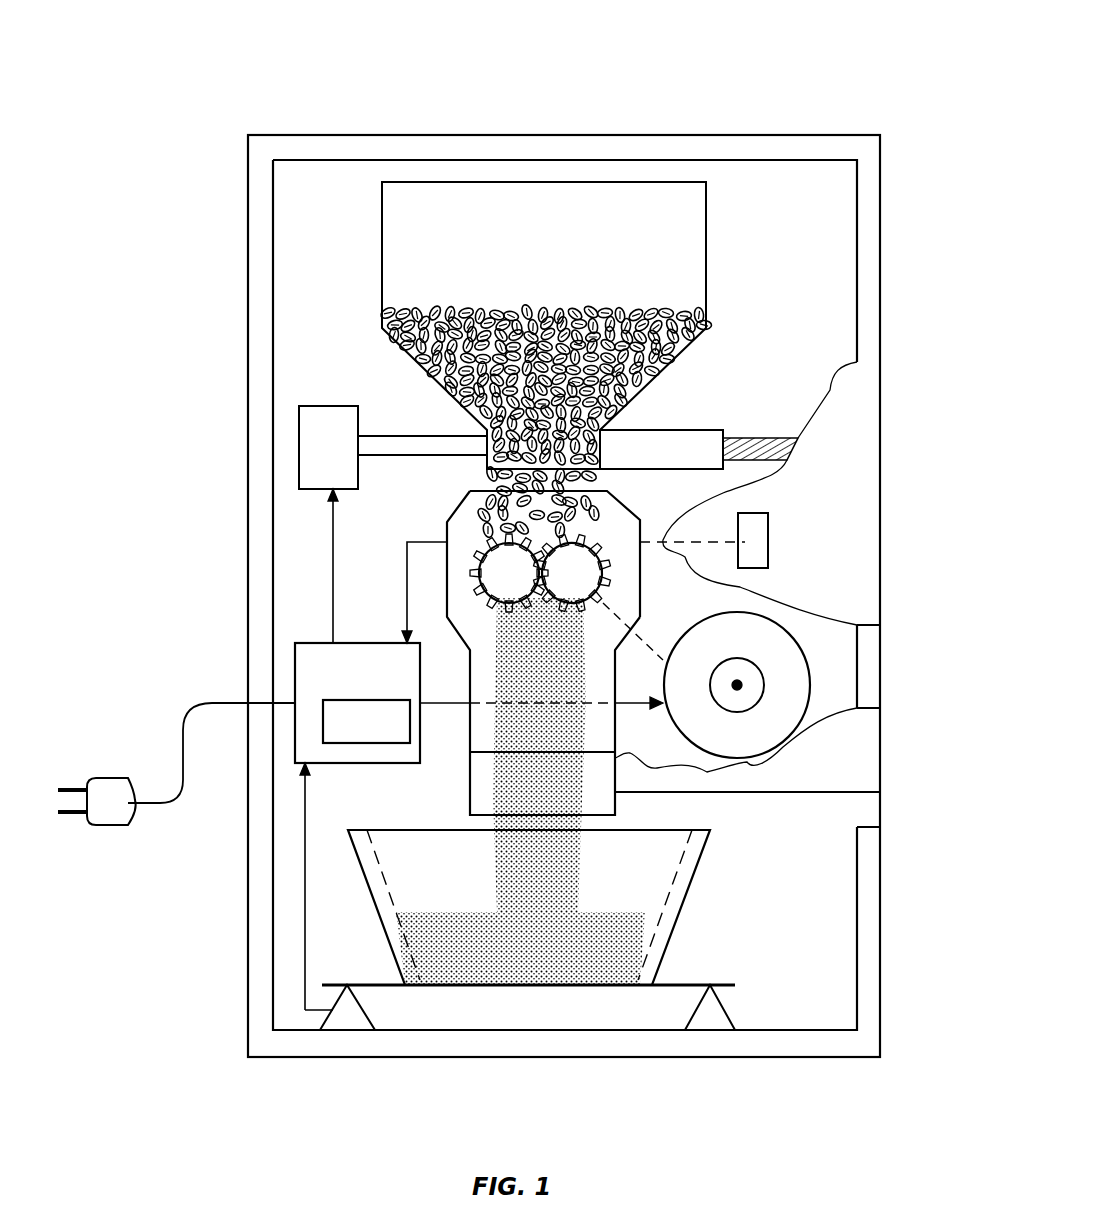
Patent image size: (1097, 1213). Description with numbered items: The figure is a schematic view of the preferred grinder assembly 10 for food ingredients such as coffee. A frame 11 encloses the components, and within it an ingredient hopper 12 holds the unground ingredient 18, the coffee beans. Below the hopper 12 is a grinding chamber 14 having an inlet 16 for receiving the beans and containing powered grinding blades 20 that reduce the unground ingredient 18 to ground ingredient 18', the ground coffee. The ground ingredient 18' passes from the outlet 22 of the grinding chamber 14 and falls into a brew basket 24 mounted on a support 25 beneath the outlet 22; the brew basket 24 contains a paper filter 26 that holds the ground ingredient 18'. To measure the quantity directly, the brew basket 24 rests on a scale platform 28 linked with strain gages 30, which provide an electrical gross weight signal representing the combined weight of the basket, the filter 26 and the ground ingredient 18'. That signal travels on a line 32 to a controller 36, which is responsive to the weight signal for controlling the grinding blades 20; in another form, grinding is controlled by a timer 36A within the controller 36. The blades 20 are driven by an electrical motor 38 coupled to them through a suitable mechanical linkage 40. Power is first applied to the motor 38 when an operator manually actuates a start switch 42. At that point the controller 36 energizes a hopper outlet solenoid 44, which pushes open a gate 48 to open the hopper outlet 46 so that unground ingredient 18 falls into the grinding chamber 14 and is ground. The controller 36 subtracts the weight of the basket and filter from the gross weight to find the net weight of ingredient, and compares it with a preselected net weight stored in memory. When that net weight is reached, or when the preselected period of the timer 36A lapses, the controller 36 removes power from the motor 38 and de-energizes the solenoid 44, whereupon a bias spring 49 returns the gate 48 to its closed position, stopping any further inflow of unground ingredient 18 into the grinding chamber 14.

The grinder assembly 10 is at (777, 48).
The frame 11 is at (867, 667).
The ingredient hopper 12 is at (697, 203).
The grinding chamber 14 is at (472, 560).
The inlet 16 is at (603, 488).
The unground ingredient 18 is at (522, 396).
The ground ingredient 18' is at (573, 922).
The powered grinding blades 20 is at (600, 567).
The outlet 22 is at (478, 815).
The brew basket 24 is at (662, 965).
The support 25 is at (723, 983).
The paper filter 26 is at (668, 930).
The scale platform 28 is at (377, 983).
The strain gages 30 is at (723, 1020).
The line 32 is at (305, 950).
The controller 36 is at (310, 657).
The timer 36A is at (325, 723).
The electrical motor 38 is at (787, 715).
The mechanical linkage 40 is at (645, 618).
The start switch 42 is at (768, 535).
The hopper outlet solenoid 44 is at (313, 458).
The hopper outlet 46 is at (487, 435).
The gate 48 is at (658, 434).
The bias spring 49 is at (737, 442).